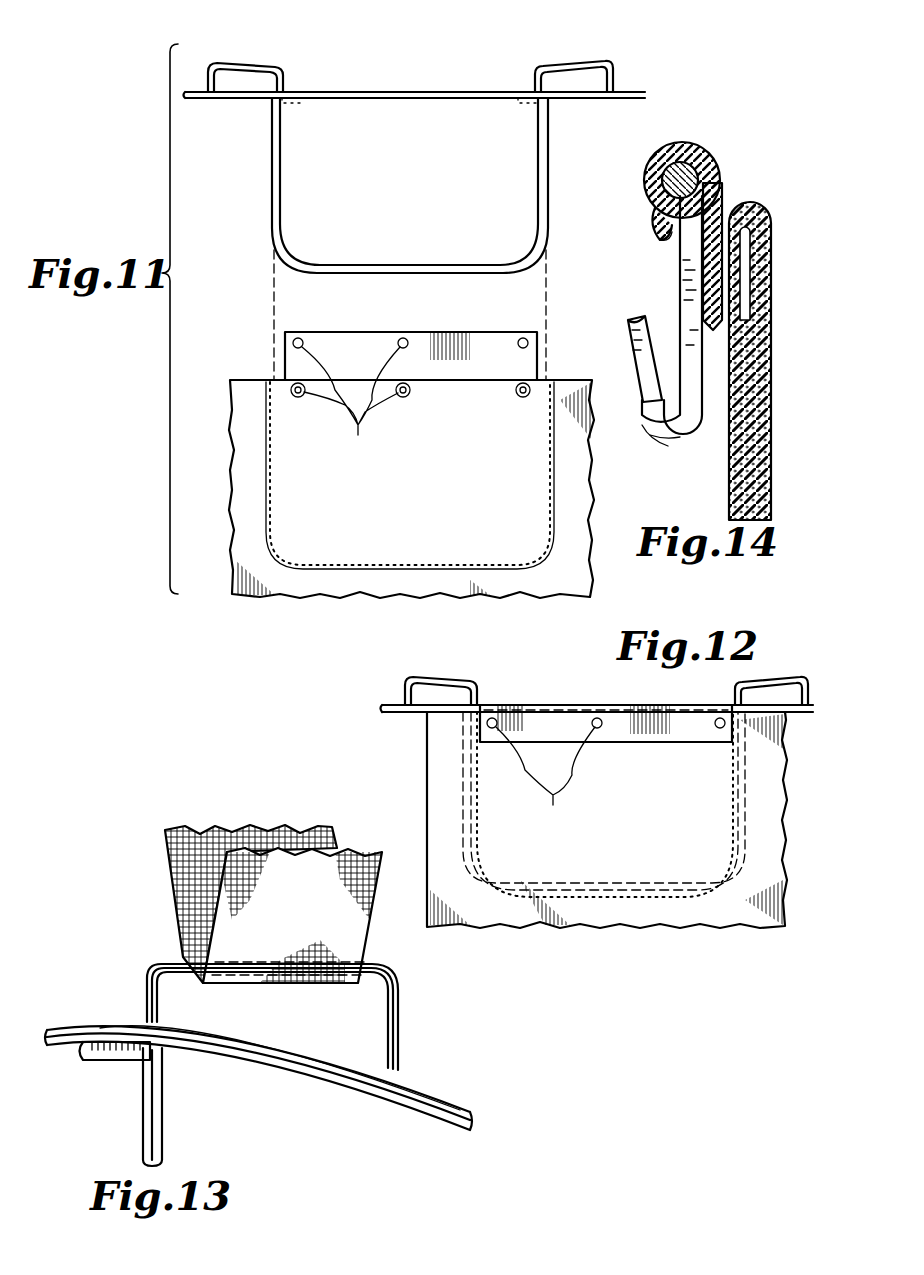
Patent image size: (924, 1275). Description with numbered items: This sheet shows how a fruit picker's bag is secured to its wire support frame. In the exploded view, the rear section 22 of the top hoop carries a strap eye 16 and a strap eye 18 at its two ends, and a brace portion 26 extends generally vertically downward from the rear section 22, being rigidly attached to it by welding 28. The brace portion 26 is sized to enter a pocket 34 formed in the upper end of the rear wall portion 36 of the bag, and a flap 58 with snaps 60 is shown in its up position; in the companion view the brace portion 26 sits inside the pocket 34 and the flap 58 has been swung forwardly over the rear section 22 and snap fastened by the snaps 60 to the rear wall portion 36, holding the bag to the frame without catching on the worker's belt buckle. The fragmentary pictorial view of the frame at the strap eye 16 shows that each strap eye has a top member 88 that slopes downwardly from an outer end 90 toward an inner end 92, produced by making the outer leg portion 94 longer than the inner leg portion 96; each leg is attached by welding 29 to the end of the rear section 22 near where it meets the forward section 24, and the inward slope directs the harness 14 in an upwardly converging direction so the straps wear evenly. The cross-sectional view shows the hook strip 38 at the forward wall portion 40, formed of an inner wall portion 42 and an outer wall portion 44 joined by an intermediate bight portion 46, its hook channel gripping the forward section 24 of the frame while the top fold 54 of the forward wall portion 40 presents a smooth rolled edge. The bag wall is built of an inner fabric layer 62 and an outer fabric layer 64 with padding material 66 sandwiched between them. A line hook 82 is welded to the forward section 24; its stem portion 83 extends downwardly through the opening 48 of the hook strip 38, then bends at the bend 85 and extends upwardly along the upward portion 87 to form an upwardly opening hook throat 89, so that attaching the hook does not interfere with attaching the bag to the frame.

In FIG. 13, the harness 14 is at (176, 908).
In FIG. 11, the strap eye 16 is at (575, 65).
In FIG. 12, the strap eye 16 is at (752, 683).
In FIG. 13, the strap eye 16 is at (408, 1001).
In FIG. 11, the strap eye 18 is at (245, 63).
In FIG. 12, the strap eye 18 is at (440, 681).
In FIG. 11, the rear section 22 is at (396, 92).
In FIG. 12, the rear section 22 is at (566, 705).
In FIG. 13, the rear section 22 is at (58, 1030).
In FIG. 14, the forward section 24 is at (688, 150).
In FIG. 13, the forward section 24 is at (452, 1105).
In FIG. 11, the brace portion 26 is at (548, 180).
In FIG. 12, the brace portion 26 is at (470, 805).
In FIG. 13, the brace portion 26 is at (160, 1135).
In FIG. 11, the welding 28 is at (277, 100).
In FIG. 13, the welding 28 is at (112, 1042).
In FIG. 13, the welding 29 is at (143, 1044).
In FIG. 11, the pocket 34 is at (500, 438).
In FIG. 12, the pocket 34 is at (622, 765).
In FIG. 11, the rear wall portion 36 is at (580, 582).
In FIG. 12, the rear wall portion 36 is at (607, 915).
In FIG. 14, the hook strip 38 is at (735, 158).
In FIG. 14, the forward wall portion 40 is at (772, 352).
In FIG. 14, the inner wall portion 42 is at (722, 190).
In FIG. 14, the outer wall portion 44 is at (652, 205).
In FIG. 14, the intermediate bight portion 46 is at (690, 145).
In FIG. 14, the opening 48 is at (662, 247).
In FIG. 14, the top fold 54 is at (755, 205).
In FIG. 11, the flap 58 is at (497, 335).
In FIG. 12, the flap 58 is at (535, 720).
In FIG. 11, the snaps 60 is at (351, 402).
In FIG. 12, the snaps 60 is at (545, 777).
In FIG. 14, the inner fabric layer 62 is at (771, 388).
In FIG. 14, the outer fabric layer 64 is at (729, 505).
In FIG. 14, the padding material 66 is at (771, 438).
In FIG. 14, the line hook 82 is at (680, 275).
In FIG. 14, the stem portion 83 is at (684, 298).
In FIG. 14, the bend 85 is at (678, 450).
In FIG. 14, the upwardly extending portion 87 is at (628, 318).
In FIG. 13, the top member 88 is at (240, 963).
In FIG. 14, the hook throat 89 is at (652, 445).
In FIG. 13, the outer end 90 is at (383, 972).
In FIG. 13, the inner end 92 is at (154, 973).
In FIG. 13, the outer leg portion 94 is at (392, 1035).
In FIG. 13, the inner leg portion 96 is at (160, 1000).